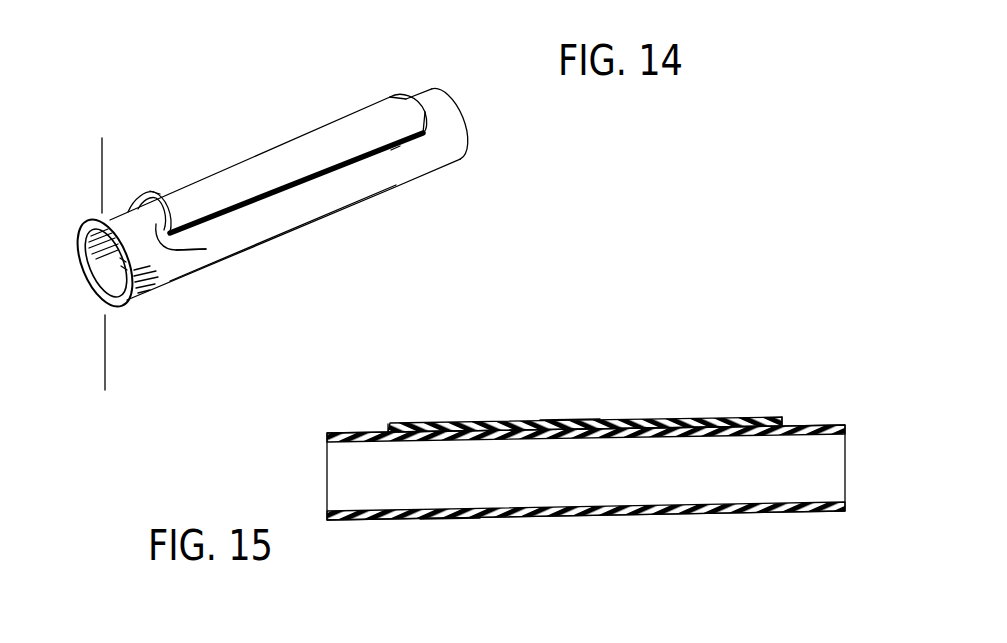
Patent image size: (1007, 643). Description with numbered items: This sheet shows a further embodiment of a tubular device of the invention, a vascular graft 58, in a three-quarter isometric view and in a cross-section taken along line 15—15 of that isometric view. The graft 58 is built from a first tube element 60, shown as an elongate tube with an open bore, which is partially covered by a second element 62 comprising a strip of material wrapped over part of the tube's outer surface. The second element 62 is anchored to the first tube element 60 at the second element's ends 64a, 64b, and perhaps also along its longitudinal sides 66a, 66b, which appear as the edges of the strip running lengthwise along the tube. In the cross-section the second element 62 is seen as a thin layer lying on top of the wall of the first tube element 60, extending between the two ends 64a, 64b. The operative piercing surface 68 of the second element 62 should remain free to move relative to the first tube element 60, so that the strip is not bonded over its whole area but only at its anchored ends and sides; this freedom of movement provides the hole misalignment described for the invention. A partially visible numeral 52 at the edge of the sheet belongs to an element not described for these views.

In FIG. 14, the line 15— 15 is at (108, 118).
In FIG. 14, the housing 52 is at (871, 9).
In FIG. 14, the vascular graft 58 is at (292, 122).
In FIG. 15, the vascular graft 58 is at (449, 529).
In FIG. 14, the first tube element 60 is at (323, 220).
In FIG. 15, the first tube element 60 is at (772, 512).
In FIG. 14, the second element 62 is at (213, 188).
In FIG. 15, the second element 62 is at (641, 418).
In FIG. 14, the end of second element 64a is at (206, 250).
In FIG. 15, the end of second element 64a is at (388, 427).
In FIG. 14, the end of second element 64b is at (452, 110).
In FIG. 15, the end of second element 64b is at (782, 418).
In FIG. 14, the longitudinal side of second element 66a is at (392, 156).
In FIG. 14, the longitudinal side of second element 66b is at (165, 190).
In FIG. 14, the operative piercing surface 68 is at (356, 112).
In FIG. 15, the operative piercing surface 68 is at (558, 420).